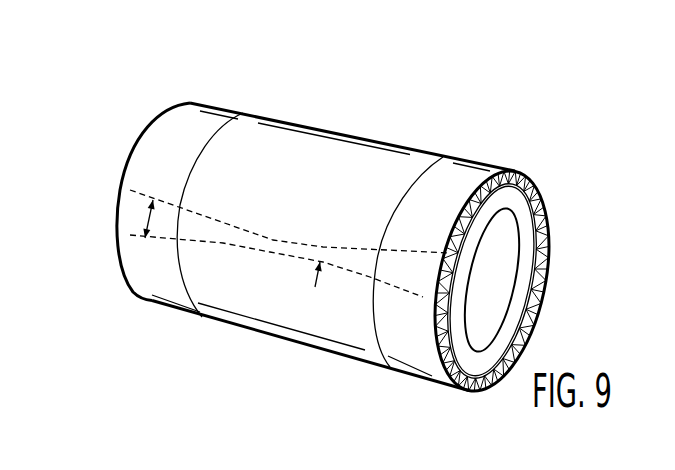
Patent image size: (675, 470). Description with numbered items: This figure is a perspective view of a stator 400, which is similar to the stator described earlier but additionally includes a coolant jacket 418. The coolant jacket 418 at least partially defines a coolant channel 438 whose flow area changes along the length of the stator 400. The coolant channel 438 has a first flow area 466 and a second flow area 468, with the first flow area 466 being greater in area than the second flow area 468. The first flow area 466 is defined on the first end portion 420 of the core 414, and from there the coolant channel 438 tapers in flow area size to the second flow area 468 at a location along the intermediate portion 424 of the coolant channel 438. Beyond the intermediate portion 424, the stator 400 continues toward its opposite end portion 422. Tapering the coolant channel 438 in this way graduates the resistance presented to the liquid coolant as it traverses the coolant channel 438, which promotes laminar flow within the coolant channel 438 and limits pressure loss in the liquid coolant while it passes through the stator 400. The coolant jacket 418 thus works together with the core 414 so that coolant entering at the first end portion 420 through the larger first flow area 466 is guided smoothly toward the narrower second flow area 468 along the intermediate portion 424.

The stator 400 is at (132, 372).
The first end portion 420 is at (227, 92).
The intermediate portion 424 is at (340, 121).
The second tube section 422 is at (472, 147).
The core 414 is at (523, 172).
The coolant jacket 418 is at (547, 222).
The coolant channel 438 is at (270, 250).
The first flow area 466 is at (323, 248).
The second flow area 468 is at (150, 215).